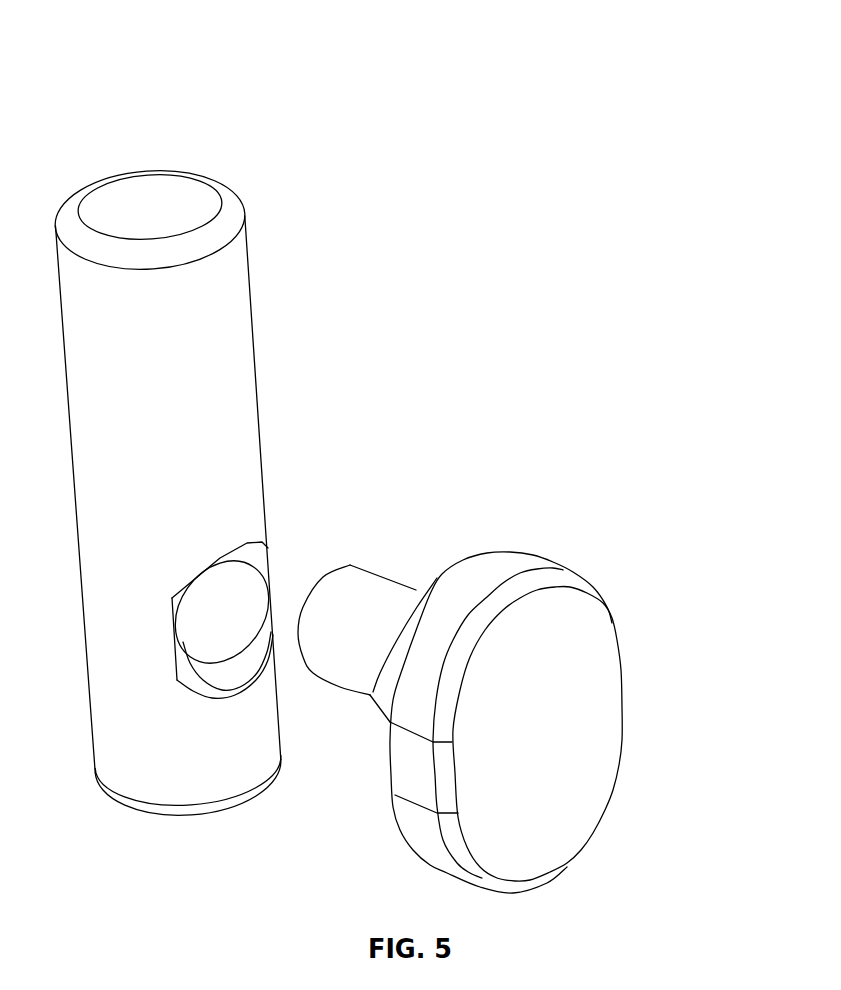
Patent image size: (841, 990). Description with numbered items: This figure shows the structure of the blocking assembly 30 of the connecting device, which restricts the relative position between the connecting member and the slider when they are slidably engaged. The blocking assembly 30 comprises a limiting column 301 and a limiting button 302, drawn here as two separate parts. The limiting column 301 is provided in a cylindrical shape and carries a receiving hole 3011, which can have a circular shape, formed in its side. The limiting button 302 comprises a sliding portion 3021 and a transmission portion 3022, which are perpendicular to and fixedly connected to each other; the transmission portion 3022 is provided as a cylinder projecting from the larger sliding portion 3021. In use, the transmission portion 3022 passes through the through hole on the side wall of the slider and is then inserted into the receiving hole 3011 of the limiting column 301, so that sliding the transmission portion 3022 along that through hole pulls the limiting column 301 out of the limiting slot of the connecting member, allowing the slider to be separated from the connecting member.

The blocking assembly 30 is at (497, 83).
The limiting column 301 is at (198, 373).
The receiving hole 3011 is at (236, 607).
The limiting button 302 is at (721, 399).
The sliding portion 3021 is at (472, 587).
The transmission portion 3022 is at (345, 600).